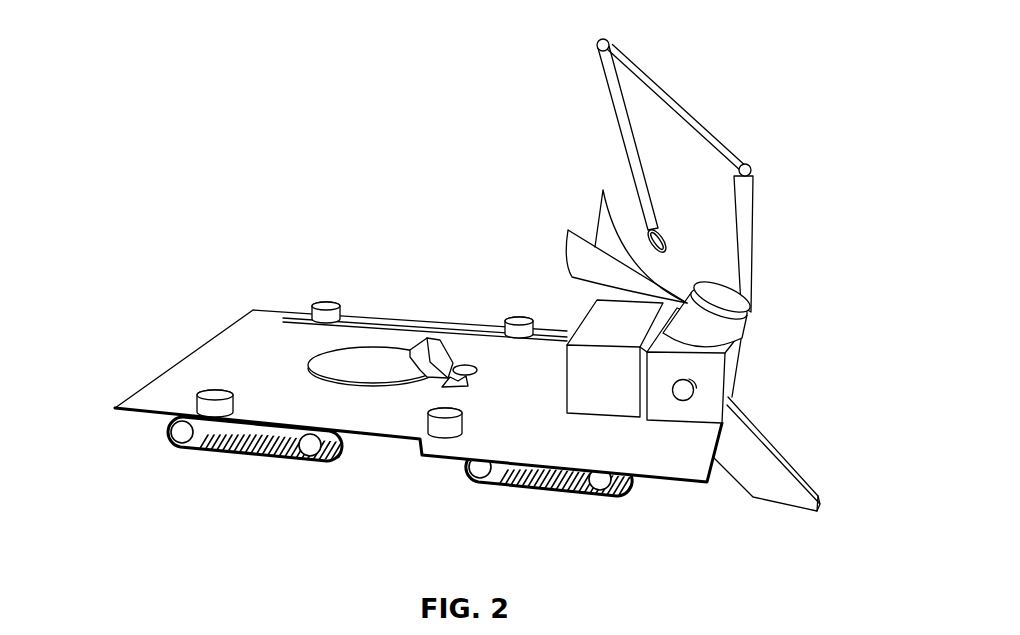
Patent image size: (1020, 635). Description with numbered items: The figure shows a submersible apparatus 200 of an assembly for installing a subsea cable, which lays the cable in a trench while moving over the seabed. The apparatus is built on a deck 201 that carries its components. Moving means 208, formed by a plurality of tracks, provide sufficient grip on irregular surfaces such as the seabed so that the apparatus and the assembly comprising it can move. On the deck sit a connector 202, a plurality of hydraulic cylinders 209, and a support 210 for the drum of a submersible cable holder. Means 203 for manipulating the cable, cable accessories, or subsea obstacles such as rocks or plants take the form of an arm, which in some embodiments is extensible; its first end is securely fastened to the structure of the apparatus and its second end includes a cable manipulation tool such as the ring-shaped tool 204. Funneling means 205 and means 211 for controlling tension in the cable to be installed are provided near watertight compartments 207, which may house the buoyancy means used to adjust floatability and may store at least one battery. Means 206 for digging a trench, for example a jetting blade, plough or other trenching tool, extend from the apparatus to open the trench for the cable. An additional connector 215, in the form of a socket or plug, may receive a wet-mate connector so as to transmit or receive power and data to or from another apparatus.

The submersible apparatus 200 is at (218, 292).
The deck 201 is at (235, 350).
The connector 202 is at (431, 353).
The means for manipulating a cable 203 is at (615, 140).
The ring-shaped tool 204 is at (668, 240).
The funneling means 205 is at (582, 249).
The means for digging a trench 206 is at (753, 453).
The watertight compartments 207 is at (657, 428).
The moving means 208 is at (223, 462).
The hydraulic cylinders 209 is at (316, 328).
The support for the drum of a submersible cable holder 210 is at (366, 372).
The means for controlling tension in the cable 211 is at (757, 316).
The additional connector 215 is at (687, 408).